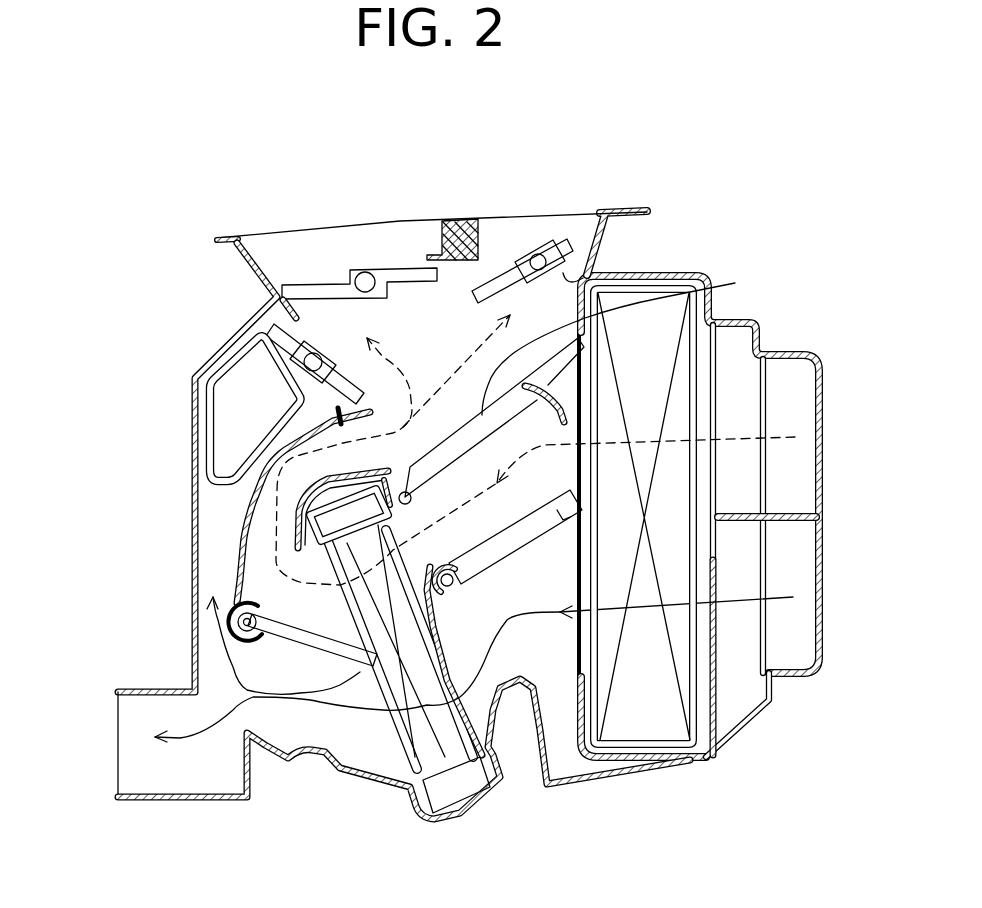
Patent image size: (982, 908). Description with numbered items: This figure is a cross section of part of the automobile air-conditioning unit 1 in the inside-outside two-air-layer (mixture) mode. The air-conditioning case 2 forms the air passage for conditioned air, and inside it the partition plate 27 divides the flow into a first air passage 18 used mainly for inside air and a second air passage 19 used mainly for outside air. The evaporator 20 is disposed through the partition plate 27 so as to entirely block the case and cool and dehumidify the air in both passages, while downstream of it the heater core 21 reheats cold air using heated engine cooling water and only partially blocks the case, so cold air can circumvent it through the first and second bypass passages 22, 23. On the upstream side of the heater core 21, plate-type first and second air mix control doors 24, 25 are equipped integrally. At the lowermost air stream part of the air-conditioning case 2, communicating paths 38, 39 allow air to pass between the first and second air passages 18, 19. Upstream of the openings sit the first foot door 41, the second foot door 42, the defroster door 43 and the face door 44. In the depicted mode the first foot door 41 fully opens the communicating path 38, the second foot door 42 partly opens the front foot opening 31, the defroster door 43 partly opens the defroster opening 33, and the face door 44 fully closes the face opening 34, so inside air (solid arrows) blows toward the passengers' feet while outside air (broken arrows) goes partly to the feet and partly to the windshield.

The air-conditioning unit 1 is at (220, 205).
The air-conditioning case 2 is at (668, 272).
The first air passage 18 is at (793, 633).
The second air passage 19 is at (795, 468).
The evaporator 20 is at (657, 727).
The heater core 21 is at (450, 753).
The first bypass passage 22 is at (526, 510).
The second bypass passage 23 is at (703, 290).
The first air mix control door 24 is at (553, 515).
The second air mix control door 25 is at (460, 457).
The partition plate 27 is at (795, 518).
The front foot opening 31 is at (227, 423).
The defroster opening 33 is at (557, 230).
The face opening 34 is at (340, 245).
The communicating path 38 is at (213, 543).
The communicating path 39 is at (267, 507).
The first foot door 41 is at (317, 767).
The second foot door 42 is at (257, 327).
The defroster door 43 is at (507, 270).
The face door 44 is at (300, 286).